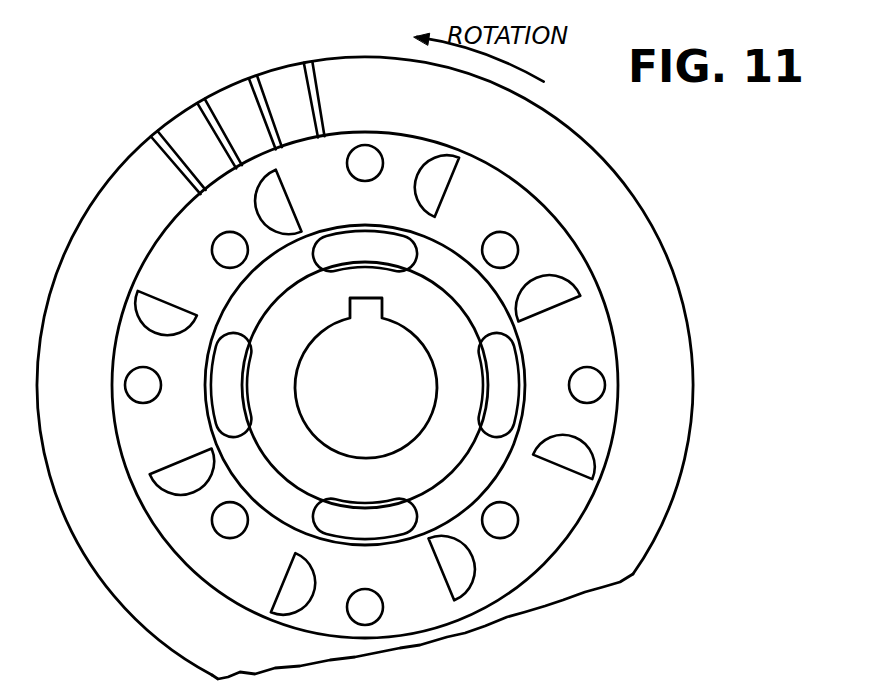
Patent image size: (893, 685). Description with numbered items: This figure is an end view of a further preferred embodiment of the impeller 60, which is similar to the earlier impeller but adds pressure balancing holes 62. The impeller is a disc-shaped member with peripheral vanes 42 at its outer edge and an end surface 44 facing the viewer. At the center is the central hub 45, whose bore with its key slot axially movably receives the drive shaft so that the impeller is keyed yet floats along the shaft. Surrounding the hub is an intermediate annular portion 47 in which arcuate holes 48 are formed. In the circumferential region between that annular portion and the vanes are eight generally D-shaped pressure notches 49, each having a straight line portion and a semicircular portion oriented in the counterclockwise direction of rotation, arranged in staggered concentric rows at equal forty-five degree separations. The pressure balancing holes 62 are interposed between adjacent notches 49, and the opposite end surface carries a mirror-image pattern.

The peripheral vanes 42 is at (228, 102).
The end surface 44 is at (515, 210).
The central hub 45 is at (443, 447).
The intermediate annular portion 47 is at (480, 302).
The arcuate holes 48 is at (228, 353).
The pressure notches 49 is at (262, 212).
The impeller 60 is at (75, 598).
The pressure balancing holes 62 is at (218, 240).